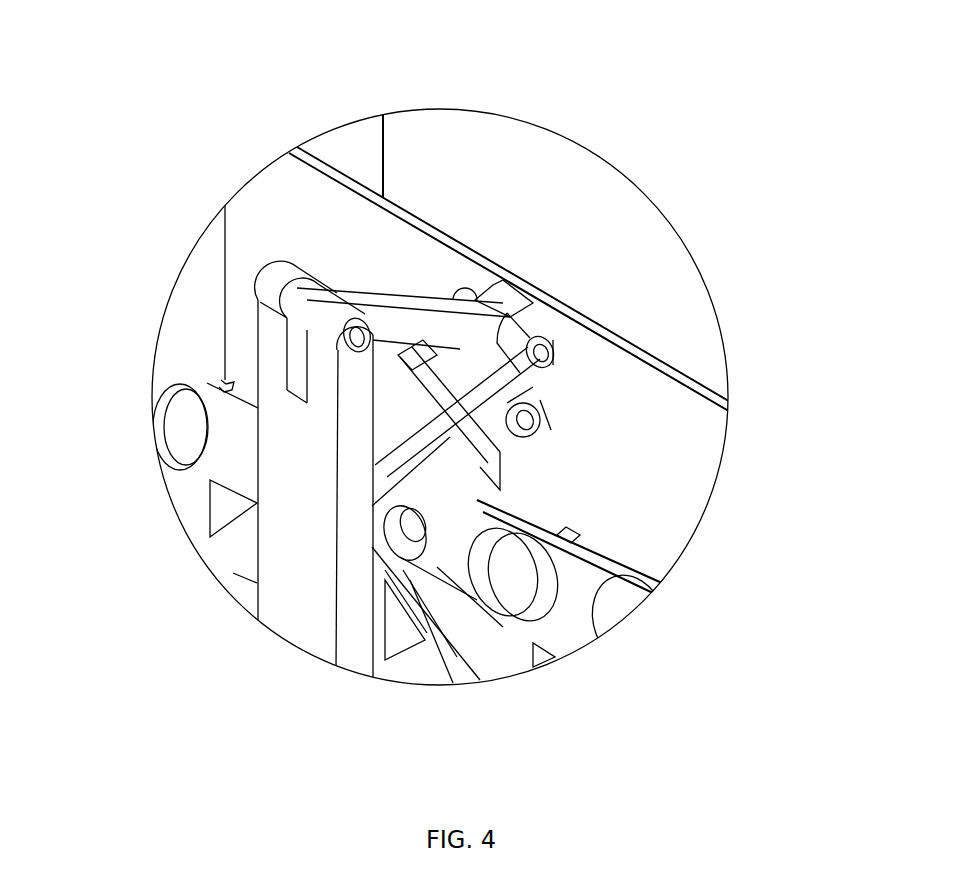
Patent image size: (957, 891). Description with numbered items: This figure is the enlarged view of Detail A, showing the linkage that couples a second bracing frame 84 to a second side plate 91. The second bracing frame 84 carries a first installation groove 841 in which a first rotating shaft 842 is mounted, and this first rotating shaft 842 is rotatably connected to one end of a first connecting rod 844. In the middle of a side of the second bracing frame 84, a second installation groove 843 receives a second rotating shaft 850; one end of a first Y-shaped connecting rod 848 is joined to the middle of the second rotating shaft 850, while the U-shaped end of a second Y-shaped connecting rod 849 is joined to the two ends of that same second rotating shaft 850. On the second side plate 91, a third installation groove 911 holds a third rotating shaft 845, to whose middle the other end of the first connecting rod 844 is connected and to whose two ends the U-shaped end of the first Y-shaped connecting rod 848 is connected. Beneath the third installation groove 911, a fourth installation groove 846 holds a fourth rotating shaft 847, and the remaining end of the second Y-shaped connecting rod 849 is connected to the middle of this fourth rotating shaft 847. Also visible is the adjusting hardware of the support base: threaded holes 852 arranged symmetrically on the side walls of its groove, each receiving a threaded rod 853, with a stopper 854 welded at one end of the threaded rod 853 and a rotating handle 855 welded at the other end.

The second bracing frame 84 is at (290, 450).
The first installation groove 841 is at (297, 348).
The first rotating shaft 842 is at (352, 322).
The second installation groove 843 is at (351, 345).
The first connecting rod 844 is at (410, 320).
The third rotating shaft 845 is at (538, 350).
The fourth installation groove 846 is at (543, 402).
The fourth rotating shaft 847 is at (550, 425).
The first Y-shaped connecting rod 848 is at (530, 429).
The second Y-shaped connecting rod 849 is at (495, 530).
The second rotating shaft 850 is at (420, 545).
The threaded hole 852 is at (548, 605).
The threaded rod 853 is at (478, 457).
The stopper 854 is at (480, 447).
The rotating handle 855 is at (530, 620).
The second side plate 91 is at (428, 258).
The third installation groove 911 is at (510, 300).
The detail A is at (689, 245).